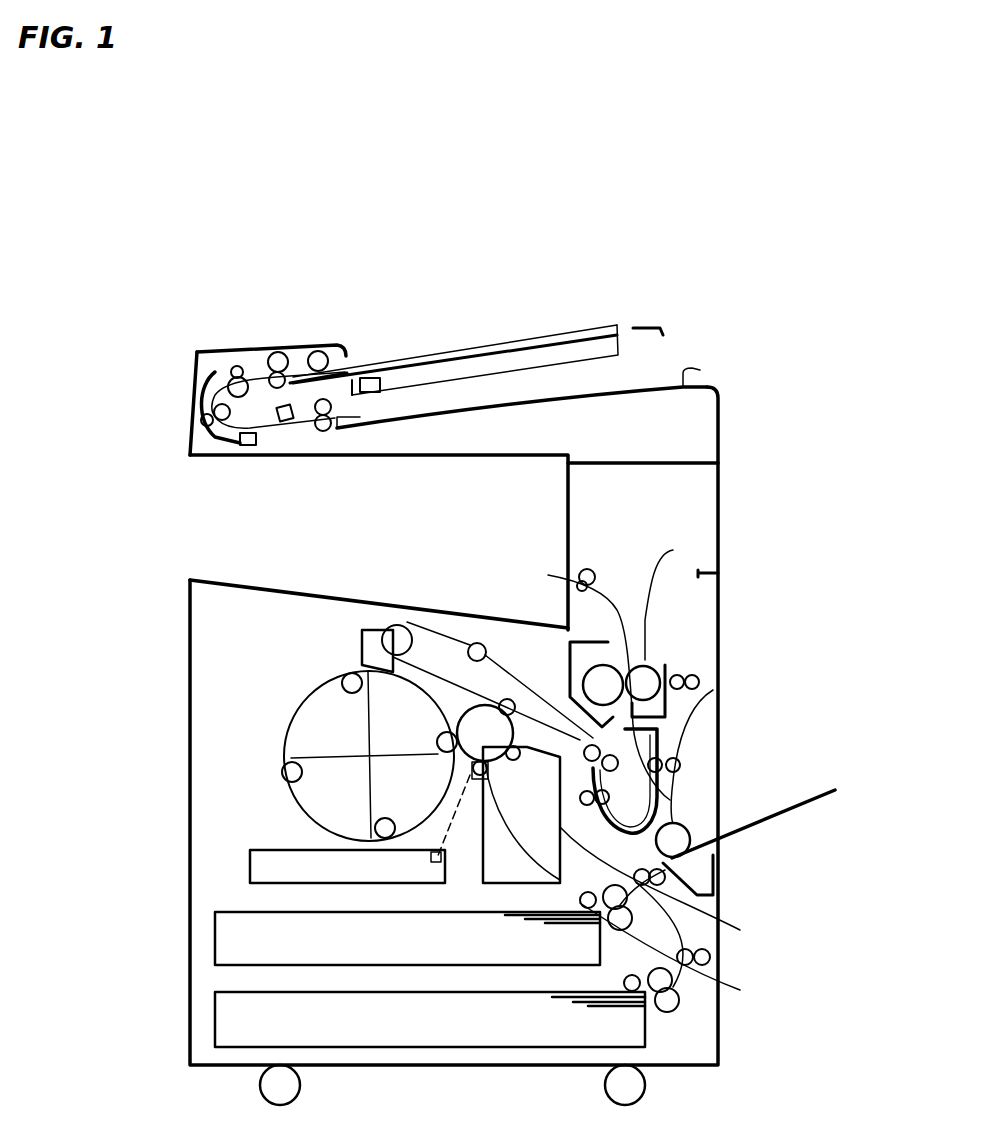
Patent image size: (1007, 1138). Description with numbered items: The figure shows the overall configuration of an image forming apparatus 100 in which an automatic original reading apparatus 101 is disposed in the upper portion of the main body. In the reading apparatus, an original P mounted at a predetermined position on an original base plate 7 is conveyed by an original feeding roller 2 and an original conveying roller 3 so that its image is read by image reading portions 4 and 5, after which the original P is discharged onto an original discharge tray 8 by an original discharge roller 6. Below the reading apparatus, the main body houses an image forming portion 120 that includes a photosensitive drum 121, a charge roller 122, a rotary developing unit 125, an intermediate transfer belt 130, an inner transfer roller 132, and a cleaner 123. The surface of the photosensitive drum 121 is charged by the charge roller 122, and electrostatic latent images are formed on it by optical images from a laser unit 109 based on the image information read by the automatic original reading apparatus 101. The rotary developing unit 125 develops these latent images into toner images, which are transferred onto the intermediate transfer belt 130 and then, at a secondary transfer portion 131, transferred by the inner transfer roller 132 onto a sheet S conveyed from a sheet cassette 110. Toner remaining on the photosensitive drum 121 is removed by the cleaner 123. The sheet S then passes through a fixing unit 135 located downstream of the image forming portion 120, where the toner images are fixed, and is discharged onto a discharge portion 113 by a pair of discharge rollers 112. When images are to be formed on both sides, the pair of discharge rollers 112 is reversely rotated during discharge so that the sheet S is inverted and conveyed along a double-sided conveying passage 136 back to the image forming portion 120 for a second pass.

The image forming apparatus 100 is at (722, 271).
The automatic original reading apparatus 101 is at (193, 363).
The original feeding roller 2 is at (303, 350).
The original conveying roller 3 is at (207, 413).
The image reading portion 4 is at (190, 413).
The image reading portion 5 is at (285, 425).
The original discharge roller 6 is at (365, 377).
The original base plate 7 is at (637, 325).
The original discharge tray 8 is at (712, 374).
The original P is at (487, 343).
The sheet S is at (548, 575).
The pair of discharge rollers 112 is at (595, 570).
The discharge portion 113 is at (345, 585).
The intermediate transfer belt 130 is at (407, 622).
The rotary developing unit 125 is at (290, 710).
The image forming portion 120 is at (238, 740).
The laser unit 109 is at (250, 862).
The sheet cassette 110 is at (215, 940).
The double-sided conveying passage 136 is at (673, 550).
The fixing unit 135 is at (647, 665).
The photosensitive drum 121 is at (660, 760).
The inner transfer roller 132 is at (517, 743).
The secondary transfer portion 131 is at (577, 757).
The cleaner 123 is at (667, 880).
The charge roller 122 is at (708, 962).